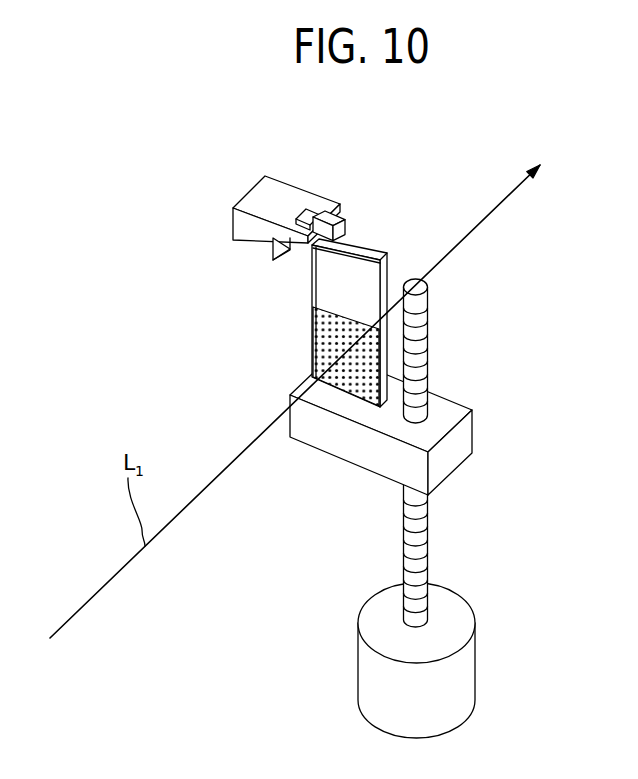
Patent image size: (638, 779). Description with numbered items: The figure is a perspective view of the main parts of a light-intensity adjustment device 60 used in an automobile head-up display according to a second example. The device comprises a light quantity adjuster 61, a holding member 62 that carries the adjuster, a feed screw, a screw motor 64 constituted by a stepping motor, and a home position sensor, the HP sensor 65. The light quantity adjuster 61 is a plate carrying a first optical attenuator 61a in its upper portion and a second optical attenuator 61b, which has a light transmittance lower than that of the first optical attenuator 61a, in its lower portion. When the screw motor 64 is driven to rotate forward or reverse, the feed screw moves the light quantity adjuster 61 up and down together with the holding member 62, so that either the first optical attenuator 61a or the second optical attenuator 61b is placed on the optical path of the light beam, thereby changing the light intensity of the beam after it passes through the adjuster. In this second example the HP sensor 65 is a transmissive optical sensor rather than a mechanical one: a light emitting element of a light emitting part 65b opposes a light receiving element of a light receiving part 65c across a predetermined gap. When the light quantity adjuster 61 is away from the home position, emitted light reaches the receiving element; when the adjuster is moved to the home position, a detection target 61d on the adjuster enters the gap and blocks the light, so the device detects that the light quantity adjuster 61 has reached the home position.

The light-intensity adjustment device 60 is at (443, 134).
The light quantity adjuster 61 is at (387, 255).
The first optical attenuator 61a is at (332, 294).
The second optical attenuator 61b is at (315, 331).
The detection target 61d is at (343, 221).
The holding member 62 is at (472, 428).
The screw motor 64 is at (361, 603).
The HP sensor 65 is at (244, 172).
The light emitting part 65b is at (273, 251).
The light receiving part 65c is at (320, 204).